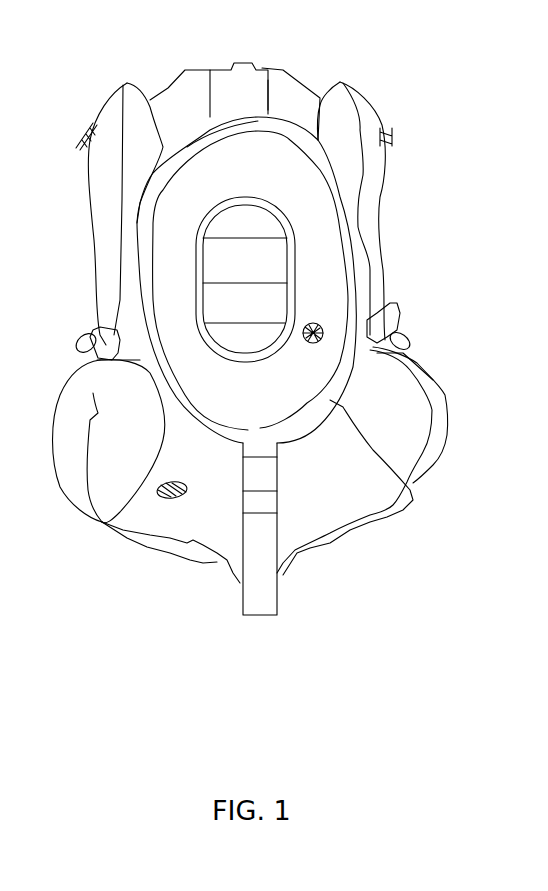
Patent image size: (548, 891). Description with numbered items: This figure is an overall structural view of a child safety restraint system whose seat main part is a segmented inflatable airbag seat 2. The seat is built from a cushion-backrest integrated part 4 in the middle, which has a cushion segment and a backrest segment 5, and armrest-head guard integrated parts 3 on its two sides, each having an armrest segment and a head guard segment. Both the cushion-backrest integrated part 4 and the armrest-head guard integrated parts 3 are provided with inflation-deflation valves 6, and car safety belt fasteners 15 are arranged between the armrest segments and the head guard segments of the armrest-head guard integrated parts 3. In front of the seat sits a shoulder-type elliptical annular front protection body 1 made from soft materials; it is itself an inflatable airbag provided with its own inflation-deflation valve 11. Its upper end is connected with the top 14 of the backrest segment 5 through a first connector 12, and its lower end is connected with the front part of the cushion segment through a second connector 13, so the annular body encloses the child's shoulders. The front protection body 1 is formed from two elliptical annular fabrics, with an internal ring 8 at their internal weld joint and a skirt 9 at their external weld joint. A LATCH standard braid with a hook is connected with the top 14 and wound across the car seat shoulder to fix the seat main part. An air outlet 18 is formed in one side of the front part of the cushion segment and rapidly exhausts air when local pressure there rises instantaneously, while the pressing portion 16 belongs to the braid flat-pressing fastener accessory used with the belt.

The shoulder-type elliptical annular front protection body 1 is at (262, 175).
The segmented inflatable airbag seat 2 is at (118, 205).
The armrest-head guard integrated part 3 is at (102, 430).
The cushion-backrest integrated part 4 is at (335, 455).
The backrest segment 5 is at (237, 222).
The inflation-deflation valve 6 is at (90, 128).
The internal ring 8 is at (203, 213).
The skirt 9 is at (343, 257).
The inflation-deflation valve 11 is at (322, 327).
The first connector 12 is at (232, 98).
The second connector 13 is at (263, 587).
The top 14 is at (187, 70).
The car safety belt fastener 15 is at (95, 340).
The pressing portion 16 is at (260, 495).
The air outlet 18 is at (167, 497).